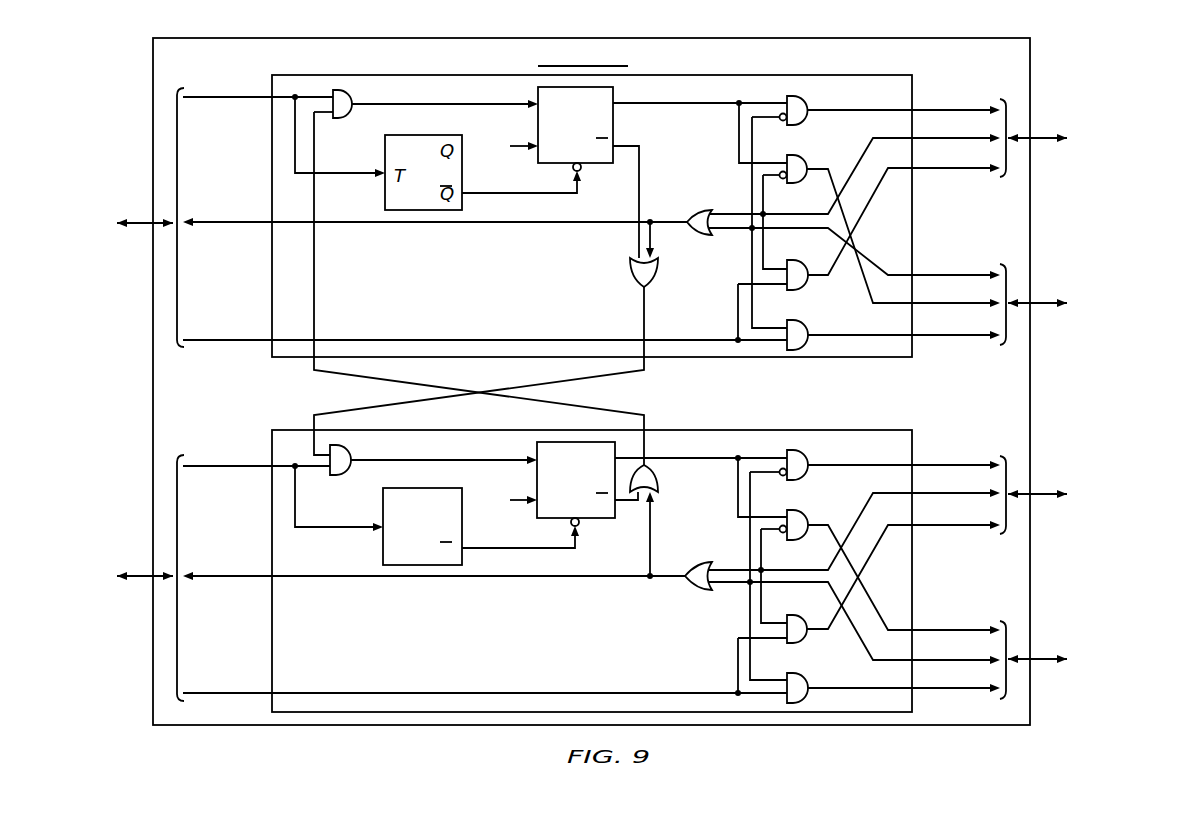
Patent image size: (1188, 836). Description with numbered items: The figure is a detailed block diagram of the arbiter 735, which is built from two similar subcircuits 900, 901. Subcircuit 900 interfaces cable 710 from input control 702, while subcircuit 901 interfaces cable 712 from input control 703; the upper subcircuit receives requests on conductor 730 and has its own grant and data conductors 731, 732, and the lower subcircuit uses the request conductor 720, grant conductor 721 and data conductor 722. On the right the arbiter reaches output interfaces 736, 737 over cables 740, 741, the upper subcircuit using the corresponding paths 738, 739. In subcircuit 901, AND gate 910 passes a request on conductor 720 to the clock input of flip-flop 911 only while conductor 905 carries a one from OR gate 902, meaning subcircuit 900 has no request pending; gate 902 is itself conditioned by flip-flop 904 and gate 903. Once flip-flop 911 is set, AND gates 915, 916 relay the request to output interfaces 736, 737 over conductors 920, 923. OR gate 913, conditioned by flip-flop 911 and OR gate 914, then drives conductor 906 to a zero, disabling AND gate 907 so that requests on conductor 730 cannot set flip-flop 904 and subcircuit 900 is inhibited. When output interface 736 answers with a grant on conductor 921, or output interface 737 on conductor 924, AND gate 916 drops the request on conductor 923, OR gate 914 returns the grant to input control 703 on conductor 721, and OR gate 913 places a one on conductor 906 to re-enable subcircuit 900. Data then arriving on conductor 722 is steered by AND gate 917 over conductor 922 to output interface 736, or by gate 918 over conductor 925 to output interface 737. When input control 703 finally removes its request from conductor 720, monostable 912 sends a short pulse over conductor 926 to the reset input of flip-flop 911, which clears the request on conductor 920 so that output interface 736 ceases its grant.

The arbiter 735 is at (657, 38).
The subcircuit 900 is at (720, 74).
The subcircuit 901 is at (712, 430).
The OR gate 902 is at (659, 268).
The gate 903 is at (700, 210).
The flip-flop 904 is at (615, 92).
The conductor 905 is at (648, 371).
The conductor 906 is at (648, 416).
The AND gate 907 is at (352, 96).
The AND gate 910 is at (350, 450).
The flip-flop 911 is at (537, 447).
The monostable 912 is at (383, 497).
The OR gate 913 is at (659, 479).
The OR gate 914 is at (700, 562).
The AND gate 915 is at (790, 450).
The AND gate 916 is at (803, 510).
The AND gate 917 is at (813, 598).
The gate 918 is at (803, 673).
The conductor 920 is at (881, 465).
The conductor 921 is at (882, 493).
The conductor 922 is at (875, 530).
The conductor 923 is at (872, 605).
The conductor 924 is at (862, 645).
The data output line 925 is at (881, 689).
The conductor 926 is at (480, 548).
The input control 702 is at (104, 217).
The input control 703 is at (104, 578).
The cable 710 is at (140, 222).
The cable 712 is at (140, 576).
The conductor 720 is at (225, 469).
The conductor 721 is at (227, 579).
The conductor 722 is at (225, 696).
The conductor 730 is at (228, 100).
The grant line 731 is at (227, 226).
The data line 732 is at (225, 343).
The output interface 736 is at (1127, 318).
The output interface 737 is at (1127, 483).
The output interface bus 738 is at (1045, 138).
The output interface bus 739 is at (1045, 303).
The cable 740 is at (1045, 494).
The cable 741 is at (1045, 659).